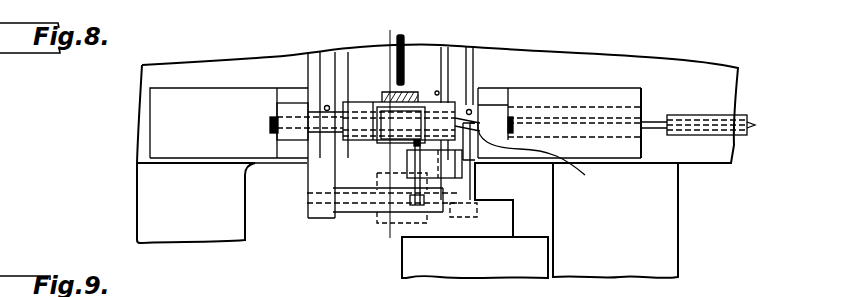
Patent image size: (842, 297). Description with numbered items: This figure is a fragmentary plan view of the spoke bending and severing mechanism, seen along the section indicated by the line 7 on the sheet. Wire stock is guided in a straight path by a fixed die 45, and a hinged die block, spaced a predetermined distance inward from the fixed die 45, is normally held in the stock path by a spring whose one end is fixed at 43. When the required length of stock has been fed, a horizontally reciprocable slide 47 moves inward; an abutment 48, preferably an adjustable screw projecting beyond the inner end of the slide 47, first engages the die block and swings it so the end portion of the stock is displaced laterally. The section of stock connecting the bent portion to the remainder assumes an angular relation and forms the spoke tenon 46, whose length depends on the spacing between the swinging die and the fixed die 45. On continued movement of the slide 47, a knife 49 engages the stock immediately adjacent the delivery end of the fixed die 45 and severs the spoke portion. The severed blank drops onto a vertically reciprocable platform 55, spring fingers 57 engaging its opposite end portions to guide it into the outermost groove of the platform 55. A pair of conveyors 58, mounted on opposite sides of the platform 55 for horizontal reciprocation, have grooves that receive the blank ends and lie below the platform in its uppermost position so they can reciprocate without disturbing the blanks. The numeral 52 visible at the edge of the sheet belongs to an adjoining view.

In FIG. 8, the section line 7- 7 is at (400, 33).
In FIG. 8, the fixed end of spring 43 is at (413, 97).
In FIG. 8, the fixed die 45 is at (512, 122).
In FIG. 8, the spoke tenon 46 is at (542, 157).
In FIG. 8, the slide 47 is at (462, 176).
In FIG. 8, the abutment 48 is at (412, 144).
In FIG. 8, the knife 49 is at (447, 172).
In FIG. 8, the platform 55 is at (430, 47).
In FIG. 8, the spring fingers 57 is at (325, 106).
In FIG. 8, the conveyors 58 is at (327, 58).
In FIG. 9, the frame member 52 is at (186, 296).